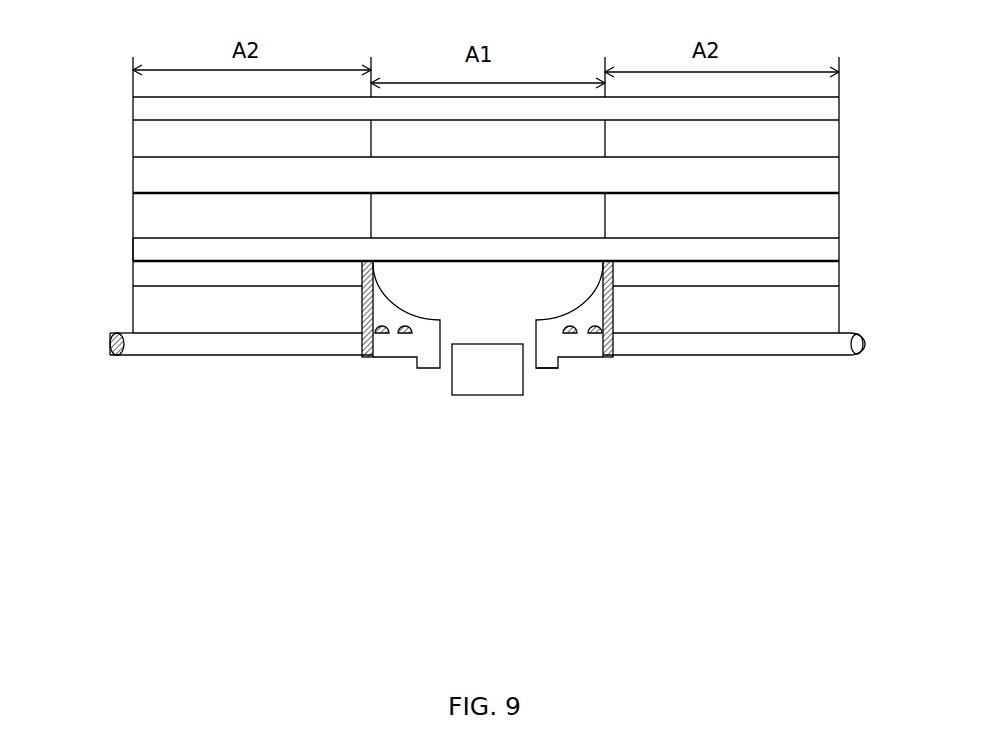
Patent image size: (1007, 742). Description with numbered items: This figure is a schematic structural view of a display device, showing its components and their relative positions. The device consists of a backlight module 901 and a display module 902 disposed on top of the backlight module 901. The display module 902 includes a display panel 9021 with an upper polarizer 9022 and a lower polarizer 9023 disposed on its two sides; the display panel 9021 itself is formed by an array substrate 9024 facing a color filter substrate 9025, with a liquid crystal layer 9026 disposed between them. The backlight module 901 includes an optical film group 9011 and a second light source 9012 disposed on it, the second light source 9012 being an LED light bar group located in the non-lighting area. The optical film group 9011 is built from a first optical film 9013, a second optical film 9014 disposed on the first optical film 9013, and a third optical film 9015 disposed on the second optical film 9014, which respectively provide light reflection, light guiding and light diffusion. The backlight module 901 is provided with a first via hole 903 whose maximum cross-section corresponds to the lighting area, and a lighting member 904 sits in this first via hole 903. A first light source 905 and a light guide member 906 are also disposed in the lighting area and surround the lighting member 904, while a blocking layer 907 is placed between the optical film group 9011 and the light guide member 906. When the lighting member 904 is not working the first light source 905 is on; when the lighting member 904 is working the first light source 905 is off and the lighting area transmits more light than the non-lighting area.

The backlight module 901 is at (447, 468).
The optical film group 9011 is at (440, 457).
The second light source 9012 is at (117, 355).
The first optical film 9013 is at (212, 347).
The second optical film 9014 is at (145, 305).
The third optical film 9015 is at (145, 272).
The display module 902 is at (494, 377).
The display panel 9021 is at (491, 346).
The upper polarizer 9022 is at (835, 108).
The lower polarizer 9023 is at (835, 255).
The array substrate 9024 is at (148, 212).
The color filter substrate 9025 is at (145, 140).
The liquid crystal layer 9026 is at (835, 175).
The first via hole 903 is at (527, 360).
The lighting member 904 is at (495, 388).
The first light source 905 is at (400, 333).
The light guide member 906 is at (432, 360).
The blocking layer 907 is at (368, 349).